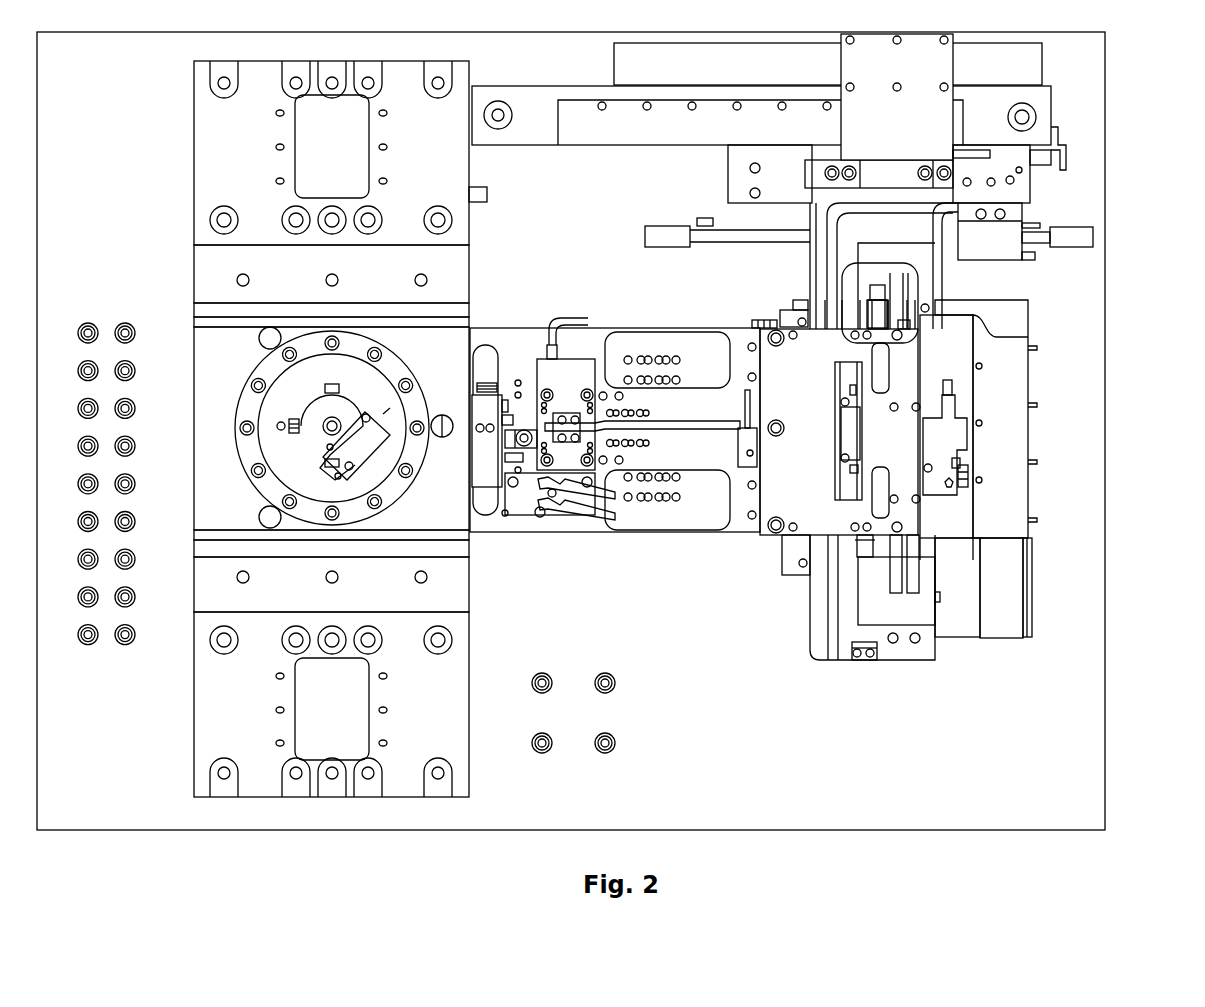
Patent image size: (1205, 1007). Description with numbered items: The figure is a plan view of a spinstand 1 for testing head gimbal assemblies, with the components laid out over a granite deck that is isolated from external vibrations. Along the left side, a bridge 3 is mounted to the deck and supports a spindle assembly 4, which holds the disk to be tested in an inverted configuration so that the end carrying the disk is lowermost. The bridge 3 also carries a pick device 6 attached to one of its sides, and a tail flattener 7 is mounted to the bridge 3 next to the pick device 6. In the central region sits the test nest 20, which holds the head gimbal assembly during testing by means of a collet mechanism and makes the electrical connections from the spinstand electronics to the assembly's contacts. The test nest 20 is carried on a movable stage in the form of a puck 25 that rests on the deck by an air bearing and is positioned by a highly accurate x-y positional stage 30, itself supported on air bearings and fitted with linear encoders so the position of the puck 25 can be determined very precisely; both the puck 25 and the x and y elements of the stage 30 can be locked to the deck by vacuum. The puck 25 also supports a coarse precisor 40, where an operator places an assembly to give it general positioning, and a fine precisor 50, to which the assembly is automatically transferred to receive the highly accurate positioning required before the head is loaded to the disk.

The spinstand 1 is at (70, 71).
The bridge 3 is at (196, 140).
The spindle assembly 4 is at (216, 367).
The pick device 6 is at (485, 498).
The tail flattener 7 is at (708, 510).
The test nest 20 is at (582, 385).
The puck 25 is at (737, 345).
The x-y positional stage 30 is at (1072, 132).
The coarse precisor 40 is at (553, 505).
The fine precisor 50 is at (557, 483).